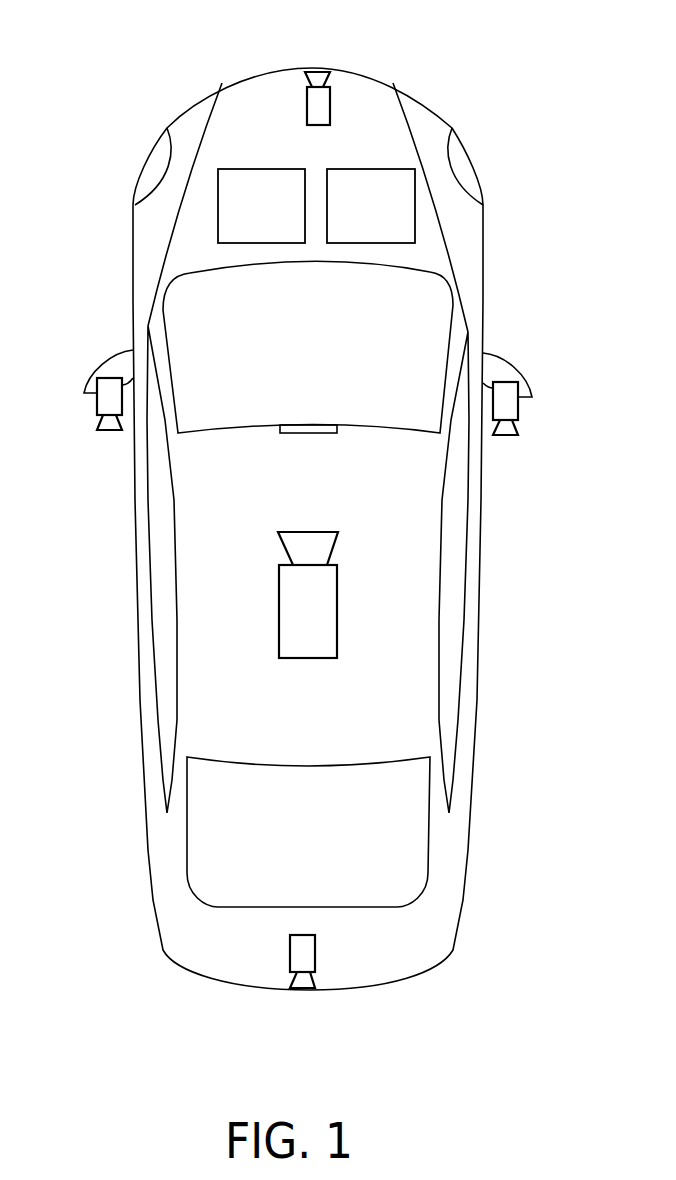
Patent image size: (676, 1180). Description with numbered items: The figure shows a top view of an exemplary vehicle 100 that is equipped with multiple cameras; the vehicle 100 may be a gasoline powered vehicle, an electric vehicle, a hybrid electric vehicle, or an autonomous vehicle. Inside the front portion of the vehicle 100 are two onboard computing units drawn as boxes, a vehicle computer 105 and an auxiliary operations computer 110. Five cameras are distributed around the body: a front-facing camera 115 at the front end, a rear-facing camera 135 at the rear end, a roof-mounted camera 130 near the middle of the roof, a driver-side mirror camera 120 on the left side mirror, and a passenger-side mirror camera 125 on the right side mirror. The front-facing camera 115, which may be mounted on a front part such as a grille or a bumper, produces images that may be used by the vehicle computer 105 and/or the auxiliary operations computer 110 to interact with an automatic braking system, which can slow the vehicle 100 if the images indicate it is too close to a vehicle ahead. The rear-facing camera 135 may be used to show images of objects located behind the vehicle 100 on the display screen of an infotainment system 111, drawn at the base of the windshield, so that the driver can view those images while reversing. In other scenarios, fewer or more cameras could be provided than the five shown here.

The vehicle 100 is at (177, 90).
The vehicle computer 105 is at (261, 206).
The auxiliary operations computer 110 is at (371, 206).
The infotainment system 111 is at (307, 434).
The front-facing camera 115 is at (307, 102).
The driver-side mirror camera 120 is at (97, 410).
The passenger-side mirror camera 125 is at (518, 413).
The roof-mounted camera 130 is at (279, 647).
The rear-facing camera 135 is at (315, 965).